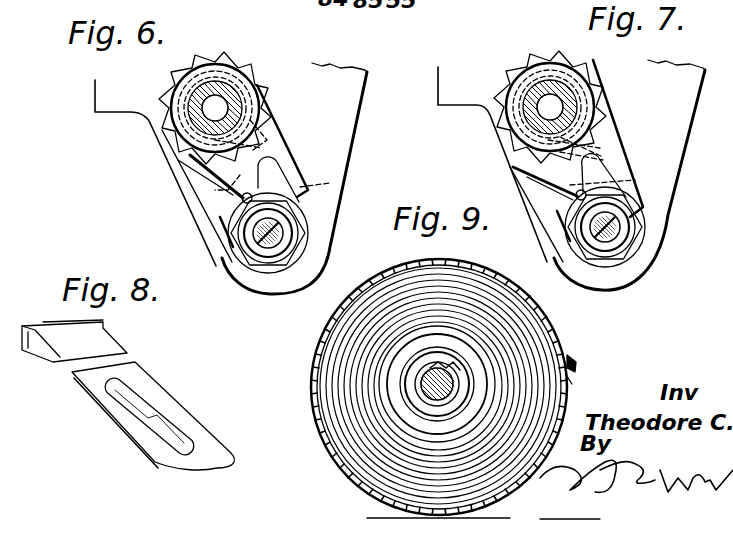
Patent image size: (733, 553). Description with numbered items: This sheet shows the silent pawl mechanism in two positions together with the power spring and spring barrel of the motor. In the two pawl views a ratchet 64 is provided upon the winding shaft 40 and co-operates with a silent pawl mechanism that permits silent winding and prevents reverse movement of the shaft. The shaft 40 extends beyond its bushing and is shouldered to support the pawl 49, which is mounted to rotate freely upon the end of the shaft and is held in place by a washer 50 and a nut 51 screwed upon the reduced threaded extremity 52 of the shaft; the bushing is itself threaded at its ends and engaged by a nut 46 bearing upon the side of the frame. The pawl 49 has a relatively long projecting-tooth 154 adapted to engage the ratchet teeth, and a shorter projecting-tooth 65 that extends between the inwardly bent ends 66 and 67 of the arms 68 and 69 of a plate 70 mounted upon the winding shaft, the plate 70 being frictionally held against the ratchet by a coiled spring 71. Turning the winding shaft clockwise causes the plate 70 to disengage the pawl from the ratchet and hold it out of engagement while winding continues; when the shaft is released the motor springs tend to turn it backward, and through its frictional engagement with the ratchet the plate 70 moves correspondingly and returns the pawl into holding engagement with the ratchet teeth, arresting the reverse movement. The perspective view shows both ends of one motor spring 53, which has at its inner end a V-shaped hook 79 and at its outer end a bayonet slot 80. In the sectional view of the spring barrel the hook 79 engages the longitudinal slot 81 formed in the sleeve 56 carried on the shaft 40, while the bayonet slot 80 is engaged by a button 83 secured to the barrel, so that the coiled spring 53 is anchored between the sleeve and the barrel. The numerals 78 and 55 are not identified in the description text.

In FIG. 6, the shaft 78 is at (288, 0).
In FIG. 6, the relatively long projecting-tooth 154 is at (198, 174).
In FIG. 7, the relatively long projecting-tooth 154 is at (525, 182).
In FIG. 6, the nut 46 is at (304, 215).
In FIG. 7, the nut 46 is at (647, 213).
In FIG. 6, the shorter projecting-tooth 65 is at (300, 166).
In FIG. 7, the shorter projecting-tooth 65 is at (605, 157).
In FIG. 6, the arm 69 is at (290, 145).
In FIG. 7, the arm 69 is at (607, 140).
In FIG. 6, the inwardly bent end 67 is at (332, 181).
In FIG. 7, the inwardly bent end 67 is at (637, 180).
In FIG. 6, the ratchet 64 is at (242, 58).
In FIG. 7, the ratchet 64 is at (576, 106).
In FIG. 6, the coiled spring 71 is at (177, 90).
In FIG. 7, the coiled spring 71 is at (527, 102).
In FIG. 6, the plate 70 is at (287, 140).
In FIG. 7, the plate 70 is at (607, 113).
In FIG. 6, the arm 68 is at (243, 186).
In FIG. 7, the arm 68 is at (513, 167).
In FIG. 6, the pawl 49 is at (228, 222).
In FIG. 7, the pawl 49 is at (557, 231).
In FIG. 6, the inwardly bent end 66 is at (208, 224).
In FIG. 7, the inwardly bent end 66 is at (527, 220).
In FIG. 6, the washer 50 is at (287, 274).
In FIG. 7, the washer 50 is at (630, 257).
In FIG. 6, the nut 51 is at (284, 249).
In FIG. 7, the nut 51 is at (623, 240).
In FIG. 6, the reduced threaded extremity 52 is at (268, 246).
In FIG. 7, the reduced threaded extremity 52 is at (610, 237).
In FIG. 9, the motor spring 53 is at (513, 332).
In FIG. 9, the spring casing ring 55 is at (316, 376).
In FIG. 9, the longitudinal slot 81 is at (415, 385).
In FIG. 9, the shaft 40 is at (437, 384).
In FIG. 9, the sleeve 56 is at (437, 400).
In FIG. 9, the button 83 is at (573, 363).
In FIG. 9, the bayonet slot 80 is at (574, 380).
In FIG. 8, the bayonet slot 80 is at (133, 410).
In FIG. 9, the V-shaped hook 79 is at (453, 364).
In FIG. 8, the V-shaped hook 79 is at (47, 323).